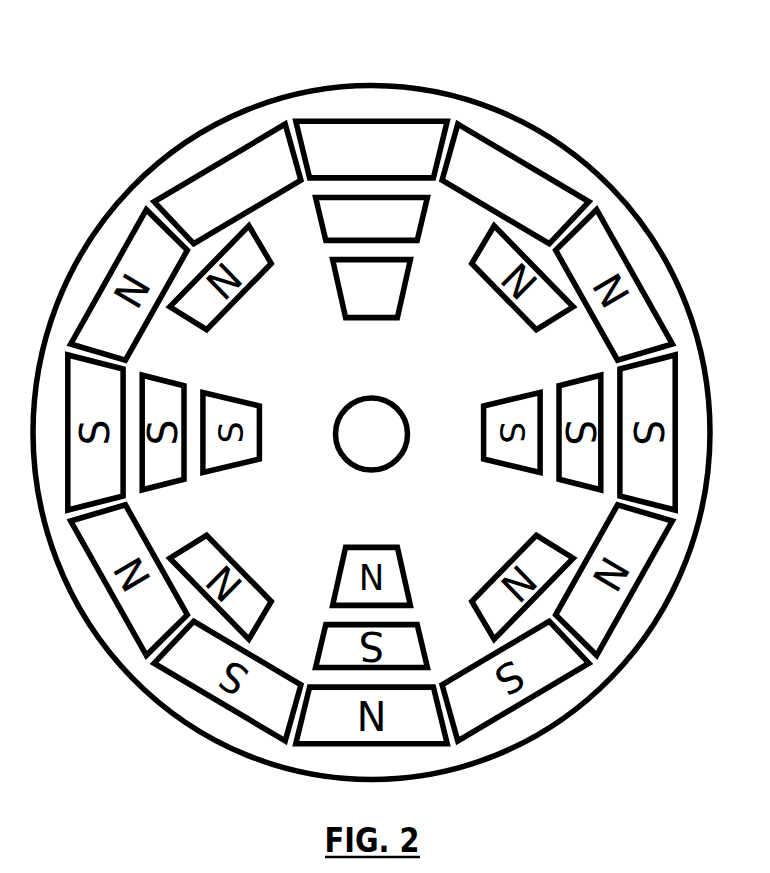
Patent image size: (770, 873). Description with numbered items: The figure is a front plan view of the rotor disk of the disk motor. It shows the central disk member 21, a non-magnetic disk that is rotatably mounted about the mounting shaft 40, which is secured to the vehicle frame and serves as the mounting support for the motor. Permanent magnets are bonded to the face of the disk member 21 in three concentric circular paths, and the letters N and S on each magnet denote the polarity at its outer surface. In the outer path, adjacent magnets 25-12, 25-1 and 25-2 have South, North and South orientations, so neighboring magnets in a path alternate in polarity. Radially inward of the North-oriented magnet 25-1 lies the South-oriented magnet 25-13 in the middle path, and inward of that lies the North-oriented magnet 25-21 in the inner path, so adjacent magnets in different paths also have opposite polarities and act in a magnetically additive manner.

The central disk member 21 is at (350, 110).
The permanent magnet in outer circular path 25-1 is at (393, 142).
The permanent magnet in middle circular path 25-13 is at (393, 220).
The permanent magnet in inner circular path 25-21 is at (390, 283).
The permanent magnet in outer circular path 25-2 is at (482, 168).
The permanent magnet in outer circular path 25-12 is at (257, 163).
The mounting shaft 40 is at (383, 432).